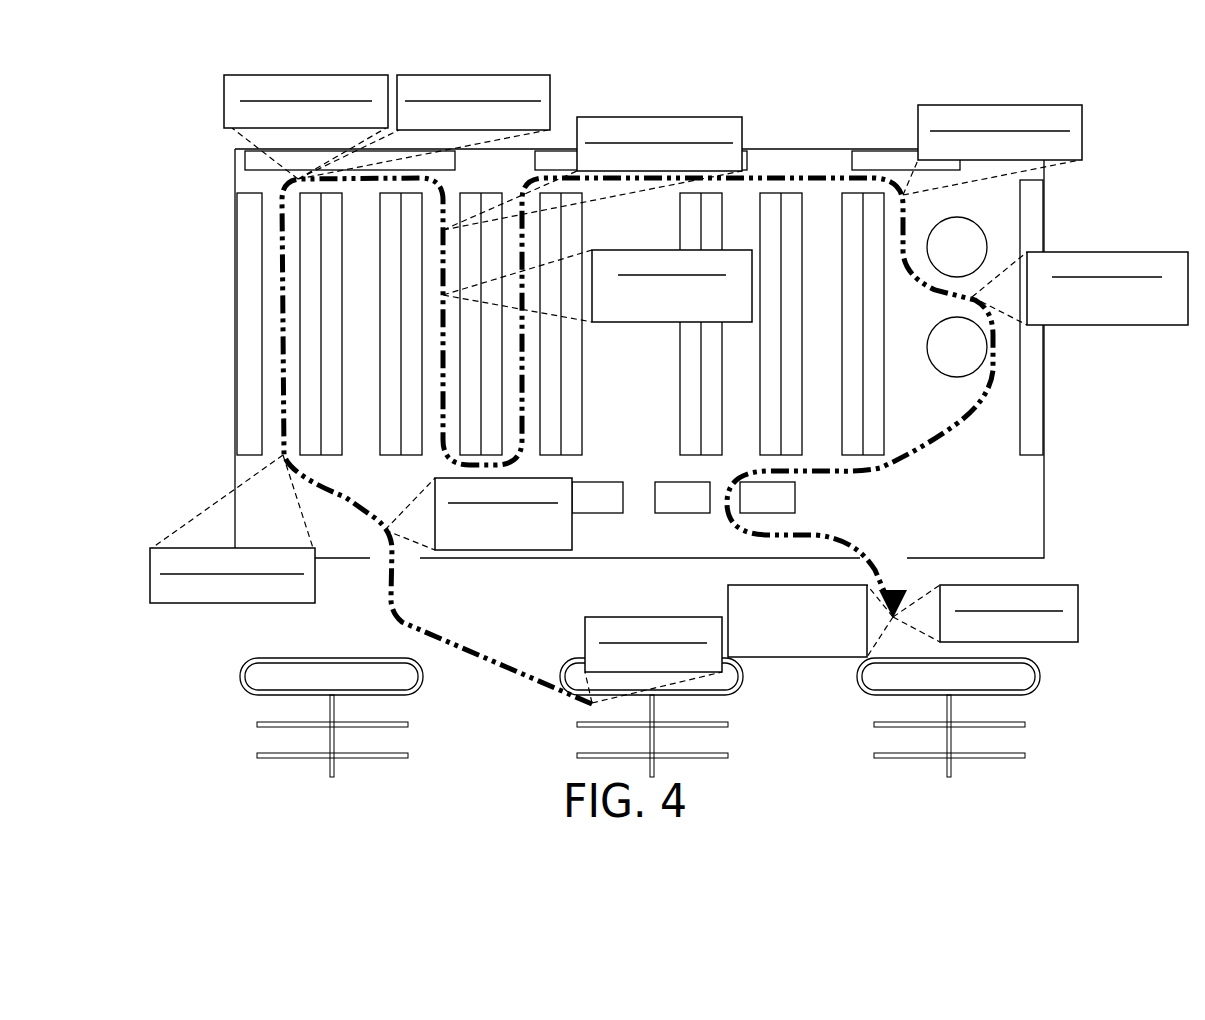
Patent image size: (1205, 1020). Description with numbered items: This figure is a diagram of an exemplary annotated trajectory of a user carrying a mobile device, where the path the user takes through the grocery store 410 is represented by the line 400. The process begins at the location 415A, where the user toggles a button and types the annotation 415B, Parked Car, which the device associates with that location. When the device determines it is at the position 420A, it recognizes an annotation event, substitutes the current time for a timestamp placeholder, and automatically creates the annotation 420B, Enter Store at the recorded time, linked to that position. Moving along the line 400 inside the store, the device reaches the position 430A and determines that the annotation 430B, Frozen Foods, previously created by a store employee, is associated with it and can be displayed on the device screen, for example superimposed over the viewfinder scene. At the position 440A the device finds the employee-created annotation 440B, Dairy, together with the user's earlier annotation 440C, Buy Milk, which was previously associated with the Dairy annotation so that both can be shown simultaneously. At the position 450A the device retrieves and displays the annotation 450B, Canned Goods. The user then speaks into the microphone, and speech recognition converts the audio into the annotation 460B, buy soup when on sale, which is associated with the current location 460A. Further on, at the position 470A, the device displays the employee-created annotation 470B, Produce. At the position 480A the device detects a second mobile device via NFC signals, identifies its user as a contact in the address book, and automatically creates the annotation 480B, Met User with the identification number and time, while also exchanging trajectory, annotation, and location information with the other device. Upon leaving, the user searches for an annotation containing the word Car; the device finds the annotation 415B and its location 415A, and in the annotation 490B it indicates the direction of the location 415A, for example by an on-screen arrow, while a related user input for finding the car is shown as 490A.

The line 400 is at (637, 441).
The grocery store 410 is at (607, 353).
The location 415A is at (624, 717).
The annotation 415B is at (634, 625).
The position 420A is at (375, 514).
The annotation 420B is at (546, 514).
The position 430A is at (232, 470).
The annotation 430B is at (269, 575).
The position 440A is at (366, 188).
The annotation 440B is at (280, 111).
The annotation 440C is at (514, 102).
The position 450A is at (541, 237).
The annotation 450B is at (683, 133).
The location 460A is at (466, 301).
The annotation 460B is at (672, 311).
The position 470A is at (982, 230).
The annotation 470B is at (963, 132).
The position 480A is at (956, 301).
The annotation 480B is at (1107, 263).
The user input find car 490A is at (1013, 621).
The annotation 490B is at (757, 615).